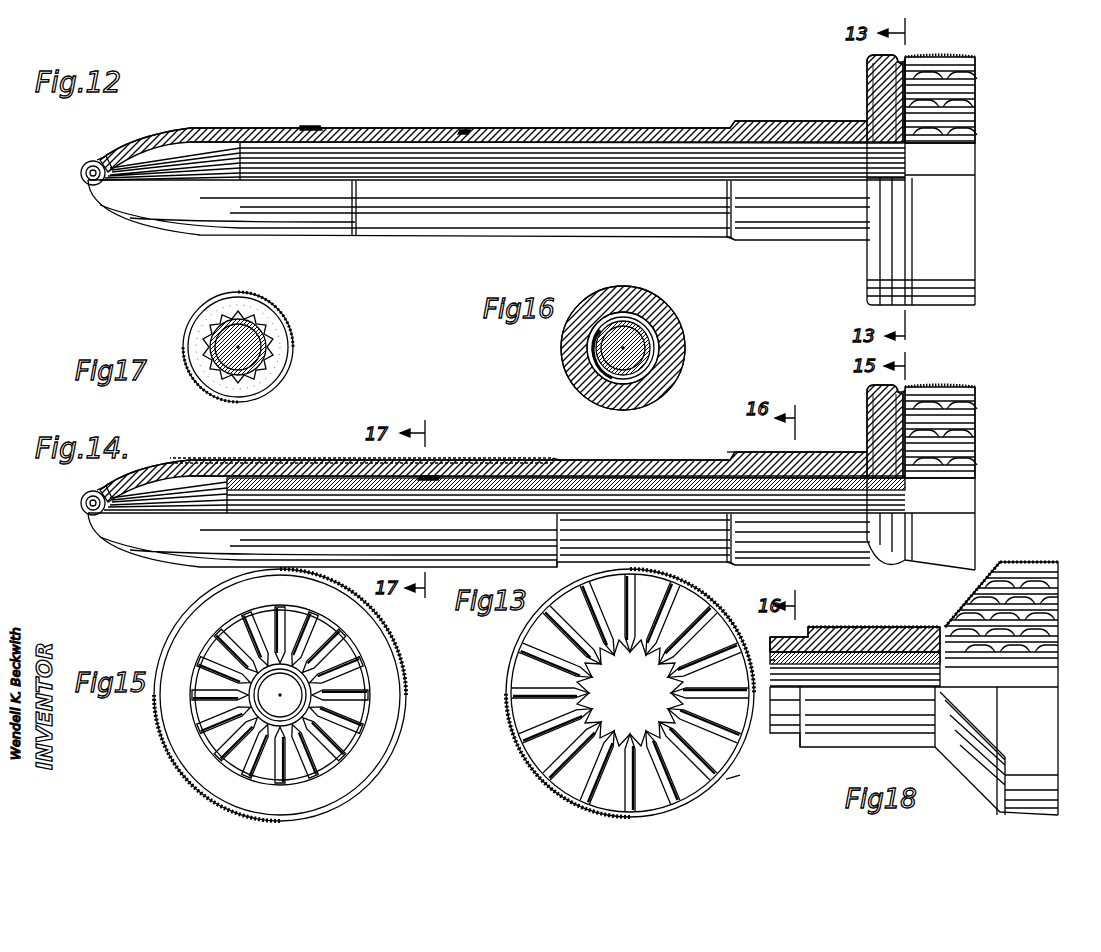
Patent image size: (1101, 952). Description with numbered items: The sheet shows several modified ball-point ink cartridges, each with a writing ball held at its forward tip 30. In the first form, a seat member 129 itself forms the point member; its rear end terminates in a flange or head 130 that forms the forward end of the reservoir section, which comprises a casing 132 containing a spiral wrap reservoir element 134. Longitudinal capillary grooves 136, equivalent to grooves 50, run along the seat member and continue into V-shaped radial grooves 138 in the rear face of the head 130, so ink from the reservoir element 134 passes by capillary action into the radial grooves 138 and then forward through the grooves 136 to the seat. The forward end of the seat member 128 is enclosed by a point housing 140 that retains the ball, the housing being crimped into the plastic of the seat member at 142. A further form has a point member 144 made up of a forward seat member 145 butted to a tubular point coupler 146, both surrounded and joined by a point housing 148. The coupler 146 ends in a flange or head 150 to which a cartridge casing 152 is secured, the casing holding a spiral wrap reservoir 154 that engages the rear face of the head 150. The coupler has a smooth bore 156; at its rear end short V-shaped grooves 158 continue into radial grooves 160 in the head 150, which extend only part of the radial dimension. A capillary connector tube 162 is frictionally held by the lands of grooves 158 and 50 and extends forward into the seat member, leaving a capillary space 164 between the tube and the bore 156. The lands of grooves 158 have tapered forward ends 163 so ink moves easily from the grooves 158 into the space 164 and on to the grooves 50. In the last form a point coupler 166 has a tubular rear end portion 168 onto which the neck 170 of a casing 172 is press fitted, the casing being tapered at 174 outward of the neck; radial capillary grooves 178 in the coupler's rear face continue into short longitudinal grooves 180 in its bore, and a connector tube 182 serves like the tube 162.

In FIG. 12, the nose tip 30 is at (82, 166).
In FIG. 14, the nose tip 30 is at (82, 502).
In FIG. 17, the grooves 50 is at (232, 318).
In FIG. 14, the grooves 50 is at (190, 502).
In FIG. 13, the seat member 128 is at (725, 778).
In FIG. 12, the seat member 129 is at (454, 130).
In FIG. 12, the flange or head 130 is at (880, 90).
In FIG. 13, the flange or head 130 is at (690, 590).
In FIG. 12, the casing 132 is at (955, 58).
In FIG. 12, the reservoir element 134 is at (975, 85).
In FIG. 12, the capillary grooves 136 is at (298, 164).
In FIG. 13, the capillary grooves 136 is at (664, 672).
In FIG. 12, the radial grooves 138 is at (905, 80).
In FIG. 13, the radial grooves 138 is at (535, 773).
In FIG. 12, the point housing 140 is at (179, 128).
In FIG. 12, the crimp 142 is at (322, 128).
In FIG. 14, the point member 144 is at (565, 462).
In FIG. 17, the seat member 145 is at (262, 310).
In FIG. 14, the seat member 145 is at (300, 476).
In FIG. 16, the point coupler 146 is at (672, 335).
In FIG. 14, the point coupler 146 is at (638, 470).
In FIG. 17, the point housing 148 is at (285, 325).
In FIG. 14, the point housing 148 is at (249, 460).
In FIG. 14, the flange or head 150 is at (880, 405).
In FIG. 15, the flange or head 150 is at (380, 724).
In FIG. 14, the cartridge casing 152 is at (945, 387).
In FIG. 15, the cartridge casing 152 is at (366, 800).
In FIG. 14, the spiral wrap reservoir 154 is at (976, 434).
In FIG. 14, the bore 156 is at (700, 470).
In FIG. 14, the grooves 158 is at (865, 480).
In FIG. 15, the grooves 158 is at (310, 640).
In FIG. 14, the radial grooves 160 is at (905, 470).
In FIG. 15, the radial grooves 160 is at (310, 668).
In FIG. 17, the capillary connector tube 162 is at (268, 345).
In FIG. 16, the capillary connector tube 162 is at (648, 345).
In FIG. 14, the capillary connector tube 162 is at (430, 478).
In FIG. 15, the capillary connector tube 162 is at (305, 690).
In FIG. 14, the tapered ends of lands 163 is at (836, 490).
In FIG. 16, the space 164 is at (642, 325).
In FIG. 14, the space 164 is at (600, 490).
In FIG. 18, the point coupler 166 is at (784, 627).
In FIG. 18, the tubular rear end portion 168 is at (810, 637).
In FIG. 18, the neck 170 is at (858, 629).
In FIG. 18, the casing 172 is at (1010, 563).
In FIG. 18, the taper 174 is at (968, 602).
In FIG. 18, the capillary grooves 178 is at (943, 664).
In FIG. 18, the longitudinal grooves 180 is at (915, 664).
In FIG. 18, the connector tube 182 is at (845, 664).